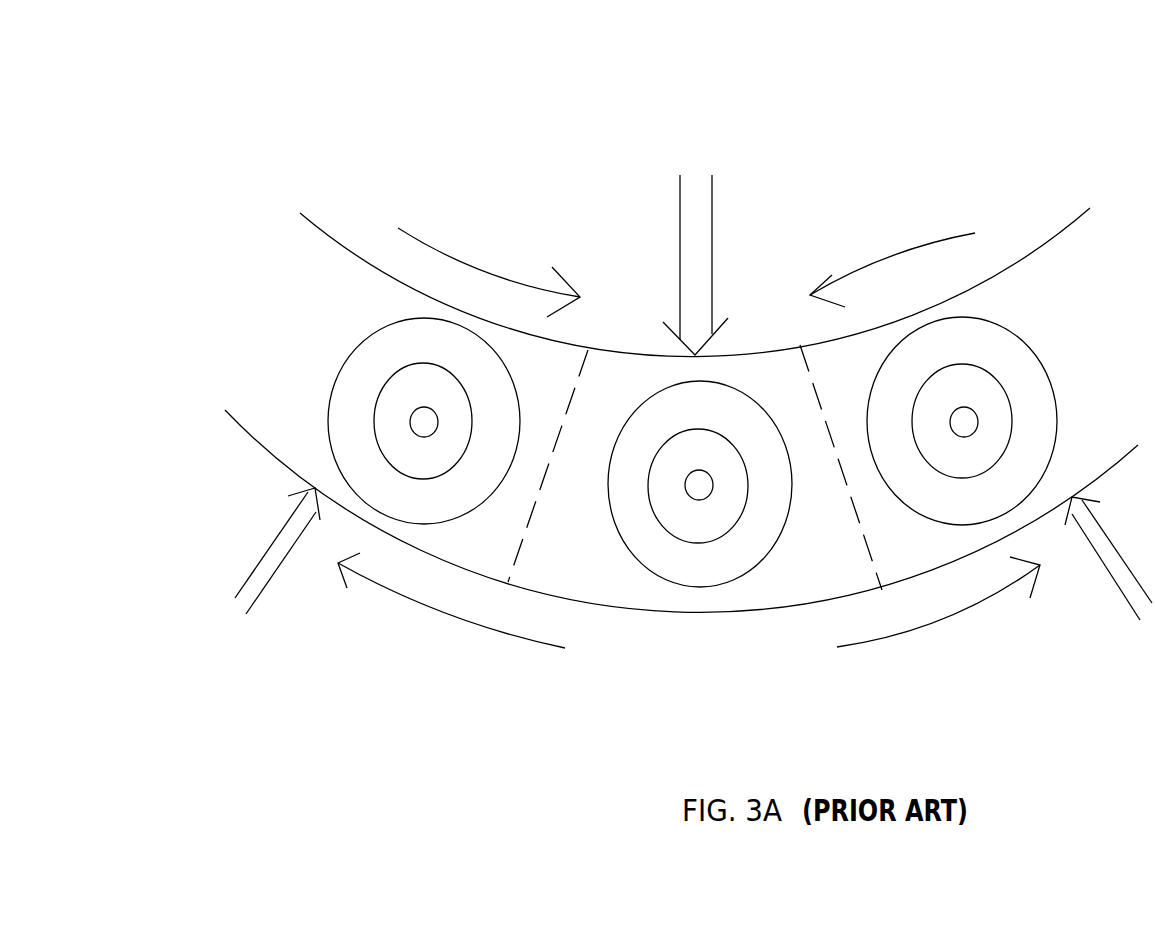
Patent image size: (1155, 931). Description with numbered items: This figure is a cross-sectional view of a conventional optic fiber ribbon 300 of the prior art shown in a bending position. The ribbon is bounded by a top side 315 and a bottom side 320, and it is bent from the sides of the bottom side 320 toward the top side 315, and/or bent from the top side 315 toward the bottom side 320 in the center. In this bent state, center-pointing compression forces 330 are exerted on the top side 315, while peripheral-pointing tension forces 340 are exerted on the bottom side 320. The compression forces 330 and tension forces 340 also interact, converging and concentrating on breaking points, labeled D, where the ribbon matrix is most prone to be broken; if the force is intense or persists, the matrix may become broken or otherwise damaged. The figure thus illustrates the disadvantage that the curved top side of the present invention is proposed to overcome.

The conventional optic fiber ribbon 300 is at (222, 70).
The top side 315 is at (1038, 245).
The bottom side 320 is at (748, 611).
The compression forces 330 is at (686, 272).
The tension forces 340 is at (689, 602).